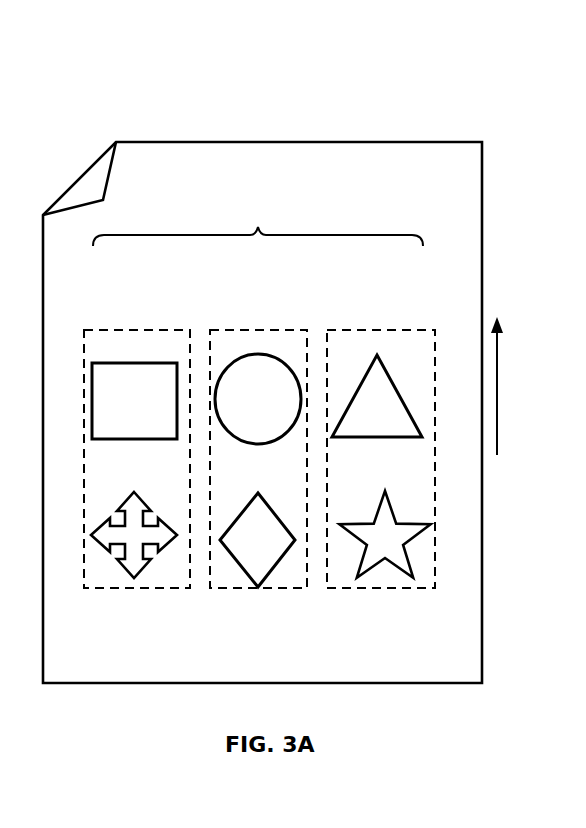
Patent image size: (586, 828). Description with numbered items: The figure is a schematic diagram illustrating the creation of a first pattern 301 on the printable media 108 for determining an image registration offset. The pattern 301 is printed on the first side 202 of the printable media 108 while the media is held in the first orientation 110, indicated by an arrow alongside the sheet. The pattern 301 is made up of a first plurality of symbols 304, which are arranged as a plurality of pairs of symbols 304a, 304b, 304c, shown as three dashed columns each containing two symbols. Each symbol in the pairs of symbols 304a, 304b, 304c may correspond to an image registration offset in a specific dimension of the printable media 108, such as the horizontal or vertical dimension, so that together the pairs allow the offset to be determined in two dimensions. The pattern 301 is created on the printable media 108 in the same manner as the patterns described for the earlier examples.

The printable media 108 is at (215, 142).
The first side 202 is at (351, 178).
The first plurality of symbols 304 is at (258, 222).
The pair of symbols 304a is at (145, 330).
The pair of symbols 304b is at (258, 330).
The pair of symbols 304c is at (381, 330).
The first orientation 110 is at (497, 408).
The pattern 301 is at (192, 610).